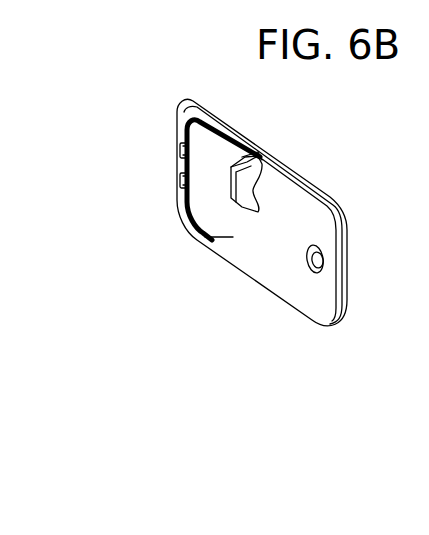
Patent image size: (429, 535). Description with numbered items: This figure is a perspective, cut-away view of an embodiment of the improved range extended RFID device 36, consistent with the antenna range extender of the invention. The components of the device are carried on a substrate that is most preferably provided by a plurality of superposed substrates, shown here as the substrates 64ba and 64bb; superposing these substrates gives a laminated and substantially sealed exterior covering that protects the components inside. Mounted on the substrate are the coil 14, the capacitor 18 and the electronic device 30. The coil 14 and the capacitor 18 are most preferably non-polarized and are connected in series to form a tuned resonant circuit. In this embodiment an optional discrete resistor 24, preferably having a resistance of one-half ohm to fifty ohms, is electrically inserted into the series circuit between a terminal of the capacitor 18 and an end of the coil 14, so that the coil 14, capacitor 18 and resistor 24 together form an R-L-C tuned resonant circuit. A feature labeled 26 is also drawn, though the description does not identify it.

The coil 14 is at (223, 117).
The capacitor 18 is at (180, 147).
The discrete resistor 24 is at (181, 177).
The hole 26 is at (320, 258).
The electronic device 30 is at (260, 153).
The range extended RFID device 36 is at (188, 312).
The substrate 64ba is at (292, 296).
The substrate 64bb is at (348, 296).